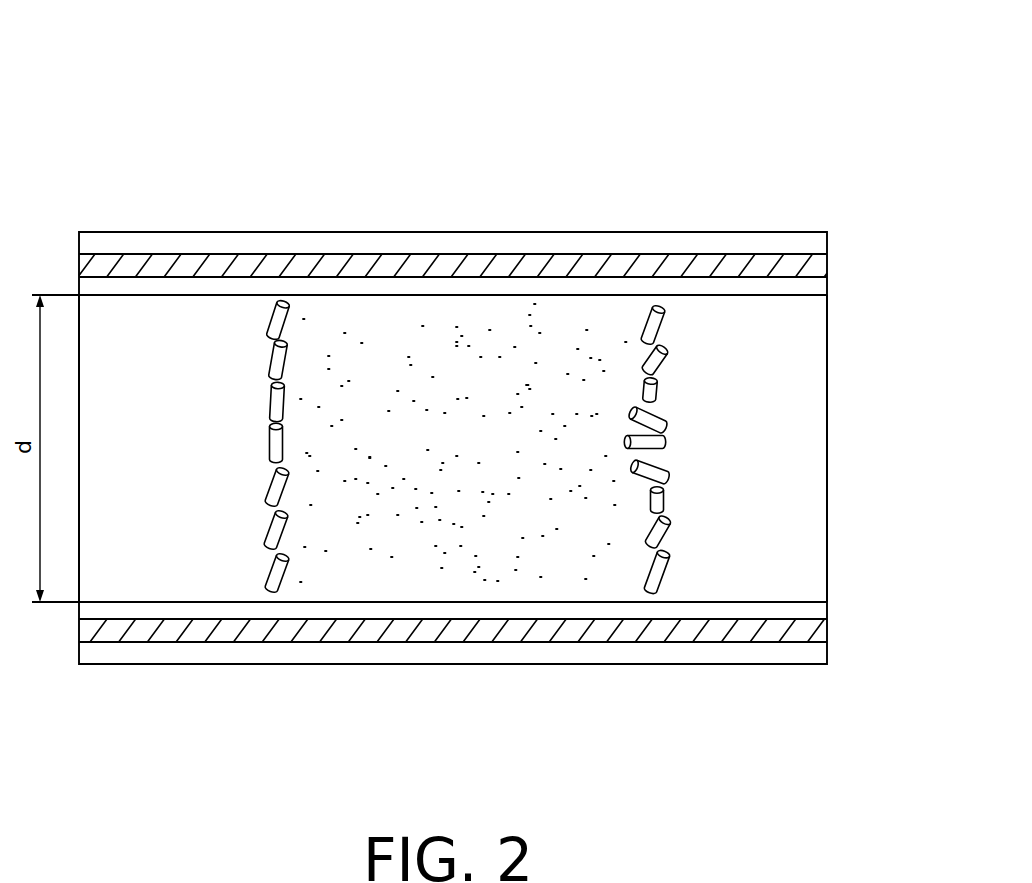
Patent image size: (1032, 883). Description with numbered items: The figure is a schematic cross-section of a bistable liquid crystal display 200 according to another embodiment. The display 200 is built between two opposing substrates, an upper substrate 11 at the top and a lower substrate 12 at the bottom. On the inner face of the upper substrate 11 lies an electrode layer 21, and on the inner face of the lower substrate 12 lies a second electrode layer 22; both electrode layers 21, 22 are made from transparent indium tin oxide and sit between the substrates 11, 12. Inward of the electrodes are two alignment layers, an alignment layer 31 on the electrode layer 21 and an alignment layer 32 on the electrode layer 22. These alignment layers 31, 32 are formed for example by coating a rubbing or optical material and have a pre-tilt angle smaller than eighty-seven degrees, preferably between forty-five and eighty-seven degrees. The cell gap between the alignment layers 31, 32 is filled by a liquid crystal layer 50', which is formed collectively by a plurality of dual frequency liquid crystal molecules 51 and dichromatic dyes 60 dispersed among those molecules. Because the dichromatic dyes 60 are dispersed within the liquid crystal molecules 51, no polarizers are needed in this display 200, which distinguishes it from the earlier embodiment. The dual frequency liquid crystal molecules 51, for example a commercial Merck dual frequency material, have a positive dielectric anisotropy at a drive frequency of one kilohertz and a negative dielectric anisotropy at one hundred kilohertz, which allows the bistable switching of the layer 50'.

The bistable liquid crystal display 200 is at (137, 80).
The upper substrate 11 is at (818, 242).
The electrode layer 21 is at (812, 267).
The alignment layer 31 is at (815, 284).
The liquid crystal layer 50' is at (500, 448).
The alignment layer 32 is at (818, 610).
The electrode layer 22 is at (818, 630).
The lower substrate 12 is at (808, 656).
The dual frequency liquid crystal molecules 51 is at (645, 327).
The dichromatic dyes 60 is at (445, 508).